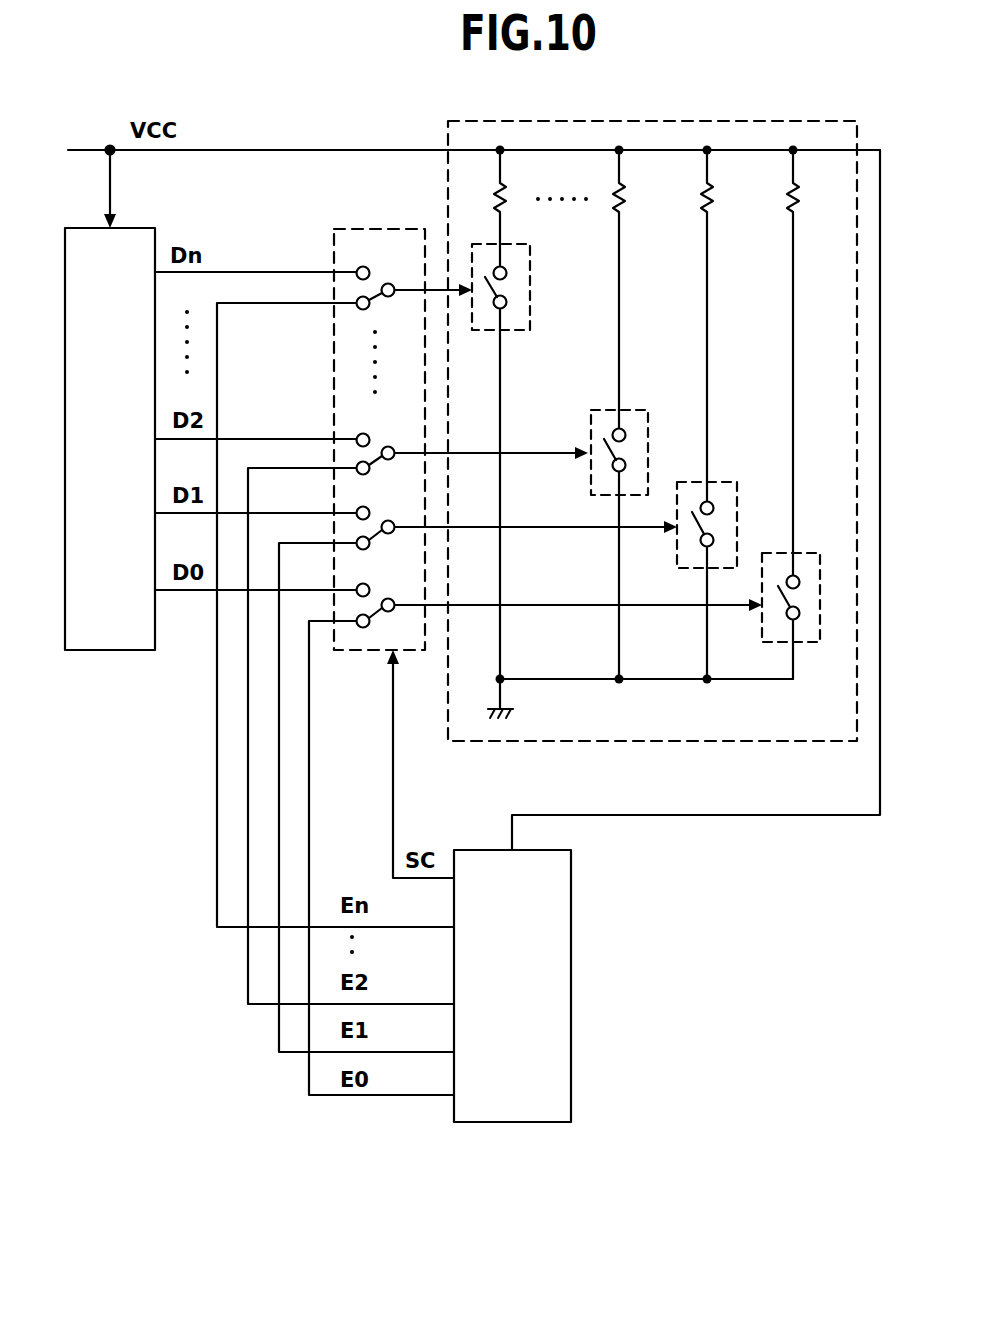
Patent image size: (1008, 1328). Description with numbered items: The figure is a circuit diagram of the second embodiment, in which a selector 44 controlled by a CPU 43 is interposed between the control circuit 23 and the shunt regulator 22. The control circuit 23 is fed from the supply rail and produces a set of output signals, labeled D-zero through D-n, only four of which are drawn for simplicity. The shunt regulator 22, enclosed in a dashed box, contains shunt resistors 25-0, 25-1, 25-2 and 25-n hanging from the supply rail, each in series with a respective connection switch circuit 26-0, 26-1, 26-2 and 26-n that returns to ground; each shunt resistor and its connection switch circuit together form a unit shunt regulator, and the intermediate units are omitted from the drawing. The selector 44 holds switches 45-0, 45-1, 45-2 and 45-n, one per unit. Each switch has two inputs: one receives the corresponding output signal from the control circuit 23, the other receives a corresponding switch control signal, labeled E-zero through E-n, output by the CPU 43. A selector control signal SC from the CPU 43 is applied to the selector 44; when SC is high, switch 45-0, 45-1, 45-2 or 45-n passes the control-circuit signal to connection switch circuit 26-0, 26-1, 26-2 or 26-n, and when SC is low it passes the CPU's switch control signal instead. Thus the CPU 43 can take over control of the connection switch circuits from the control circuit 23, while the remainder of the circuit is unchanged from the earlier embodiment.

The shunt regulator 22 is at (550, 741).
The control circuit 23 is at (100, 650).
The CPU 43 is at (571, 878).
The selector 44 is at (378, 225).
The switch 45-n is at (415, 275).
The switch 45-2 is at (473, 441).
The switch 45-1 is at (517, 516).
The switch 45-0 is at (560, 593).
The shunt resistor 25-n is at (508, 198).
The shunt resistor 25-2 is at (626, 198).
The shunt resistor 25-1 is at (714, 198).
The shunt resistor 25-0 is at (800, 198).
The connection switch circuit 26-n is at (512, 330).
The connection switch circuit 26-2 is at (633, 410).
The connection switch circuit 26-1 is at (722, 482).
The connection switch circuit 26-0 is at (805, 553).